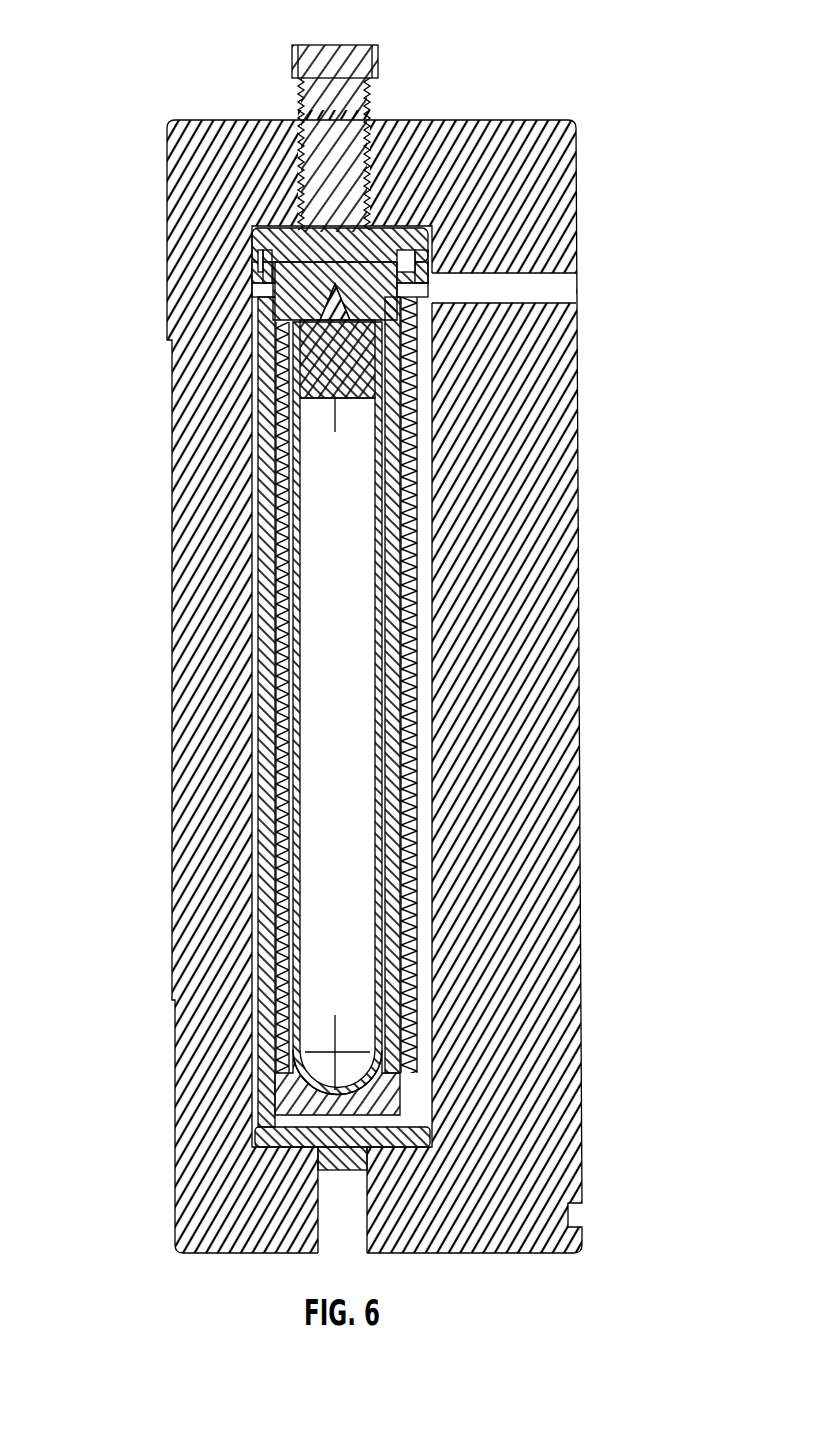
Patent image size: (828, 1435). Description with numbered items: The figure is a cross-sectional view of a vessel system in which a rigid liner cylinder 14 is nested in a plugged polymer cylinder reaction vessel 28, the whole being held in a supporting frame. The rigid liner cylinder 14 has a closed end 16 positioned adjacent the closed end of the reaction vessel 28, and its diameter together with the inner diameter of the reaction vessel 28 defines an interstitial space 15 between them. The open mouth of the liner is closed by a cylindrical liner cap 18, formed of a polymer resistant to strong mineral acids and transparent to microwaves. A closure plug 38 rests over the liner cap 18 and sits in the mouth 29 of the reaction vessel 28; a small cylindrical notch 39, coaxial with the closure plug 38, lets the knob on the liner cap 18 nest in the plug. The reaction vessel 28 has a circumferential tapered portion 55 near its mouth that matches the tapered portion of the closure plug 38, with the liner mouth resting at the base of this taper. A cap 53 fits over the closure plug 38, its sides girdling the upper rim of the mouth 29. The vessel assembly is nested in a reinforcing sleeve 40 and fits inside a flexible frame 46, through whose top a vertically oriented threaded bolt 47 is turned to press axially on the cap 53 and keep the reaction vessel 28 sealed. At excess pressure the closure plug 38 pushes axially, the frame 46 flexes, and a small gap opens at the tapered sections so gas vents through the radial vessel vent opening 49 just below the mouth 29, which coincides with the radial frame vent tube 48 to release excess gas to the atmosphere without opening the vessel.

The rigid liner cylinder 14 is at (322, 630).
The interstitial space 15 is at (400, 638).
The closed end 16 is at (337, 1036).
The cylindrical liner cap 18 is at (335, 433).
The plugged polymer cylinder reaction vessel 28 is at (265, 393).
The mouth of the reaction vessel 29 is at (395, 268).
The closure plug 38 is at (305, 280).
The small cylindrical notch 39 is at (388, 250).
The reinforcing sleeve 40 is at (412, 996).
The flexible frame 46 is at (190, 533).
The bolt 47 is at (355, 45).
The radial frame vent tube 48 is at (547, 281).
The radial vessel vent opening 49 is at (405, 287).
The cap 53 is at (282, 250).
The circumferential tapered portion 55 is at (392, 314).